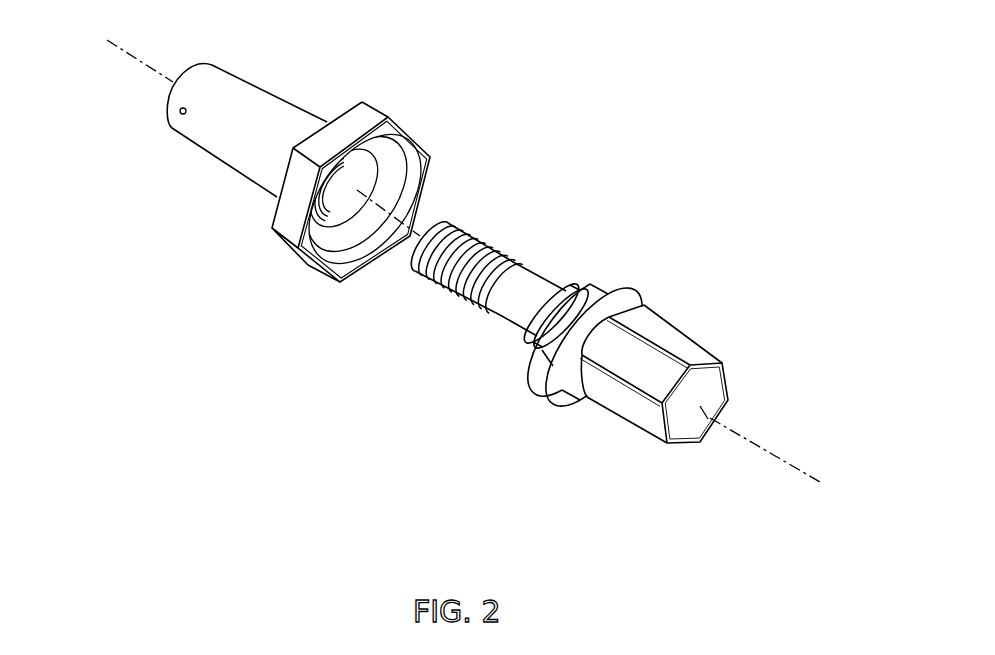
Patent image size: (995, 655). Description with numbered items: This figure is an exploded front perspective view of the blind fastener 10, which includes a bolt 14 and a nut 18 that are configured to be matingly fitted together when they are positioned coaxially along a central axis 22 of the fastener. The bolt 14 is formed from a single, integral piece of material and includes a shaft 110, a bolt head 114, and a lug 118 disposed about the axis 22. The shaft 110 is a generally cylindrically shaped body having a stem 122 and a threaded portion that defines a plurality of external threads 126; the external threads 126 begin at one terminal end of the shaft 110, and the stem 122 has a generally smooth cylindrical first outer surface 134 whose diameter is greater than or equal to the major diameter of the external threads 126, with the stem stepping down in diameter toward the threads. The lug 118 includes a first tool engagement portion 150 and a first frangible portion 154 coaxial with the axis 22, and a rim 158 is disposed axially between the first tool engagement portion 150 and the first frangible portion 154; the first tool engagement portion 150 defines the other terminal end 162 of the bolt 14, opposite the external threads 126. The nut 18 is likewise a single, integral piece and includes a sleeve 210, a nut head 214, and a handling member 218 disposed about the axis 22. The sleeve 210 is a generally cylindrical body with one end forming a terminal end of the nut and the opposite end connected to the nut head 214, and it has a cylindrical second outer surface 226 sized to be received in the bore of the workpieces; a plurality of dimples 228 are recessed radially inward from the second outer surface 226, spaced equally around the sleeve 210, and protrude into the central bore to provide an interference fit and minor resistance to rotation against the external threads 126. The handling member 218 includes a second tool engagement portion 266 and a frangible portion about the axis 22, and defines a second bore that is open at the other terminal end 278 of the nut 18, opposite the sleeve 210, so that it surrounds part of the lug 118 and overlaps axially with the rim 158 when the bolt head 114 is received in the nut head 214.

The blind fastener 10 is at (235, 436).
The bolt 14 is at (290, 375).
The nut 18 is at (290, 375).
The central axis 22 is at (133, 52).
The shaft 110 is at (508, 368).
The bolt head 114 is at (527, 379).
The lug 118 is at (673, 467).
The stem 122 is at (546, 290).
The external threads 126 is at (475, 228).
The first outer surface 134 is at (537, 287).
The first tool engagement portion 150 is at (700, 356).
The first frangible portion 154 is at (597, 290).
The rim 158 is at (643, 303).
The terminal end 162 is at (693, 410).
The sleeve 210 is at (242, 232).
The nut head 214 is at (357, 187).
The handling member 218 is at (317, 317).
The second outer surface 226 is at (228, 84).
The dimples 228 is at (178, 110).
The second tool engagement portion 266 is at (358, 120).
The terminal end 278 is at (420, 163).